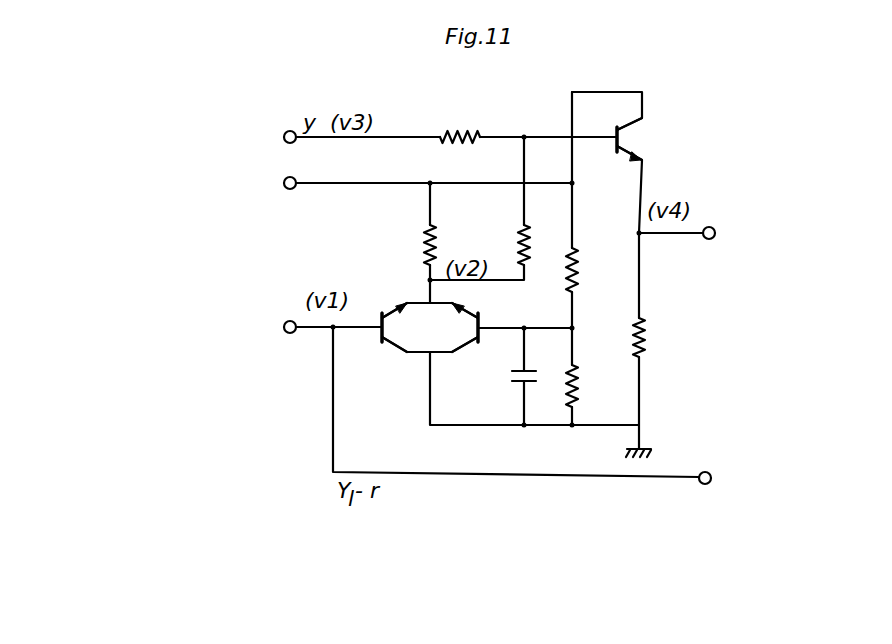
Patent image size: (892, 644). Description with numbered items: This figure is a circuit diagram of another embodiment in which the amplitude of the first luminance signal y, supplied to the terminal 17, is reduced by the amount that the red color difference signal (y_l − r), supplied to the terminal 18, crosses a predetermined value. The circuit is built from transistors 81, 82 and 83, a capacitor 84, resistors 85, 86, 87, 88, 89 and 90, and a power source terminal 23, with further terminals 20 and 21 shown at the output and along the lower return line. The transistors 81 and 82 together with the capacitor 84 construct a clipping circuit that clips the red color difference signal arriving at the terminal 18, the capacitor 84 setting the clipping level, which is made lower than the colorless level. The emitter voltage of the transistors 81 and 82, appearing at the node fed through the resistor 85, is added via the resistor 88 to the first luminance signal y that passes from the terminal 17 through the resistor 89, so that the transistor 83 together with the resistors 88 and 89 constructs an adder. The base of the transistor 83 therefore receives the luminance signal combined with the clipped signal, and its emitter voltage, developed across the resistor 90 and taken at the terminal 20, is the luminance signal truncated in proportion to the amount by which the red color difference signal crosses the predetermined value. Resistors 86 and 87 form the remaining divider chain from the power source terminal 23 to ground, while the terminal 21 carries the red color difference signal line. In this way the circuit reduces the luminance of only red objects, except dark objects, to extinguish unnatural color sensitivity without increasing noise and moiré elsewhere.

The terminal 17 is at (284, 136).
The power source terminal 23 is at (284, 183).
The terminal 18 is at (284, 327).
The output terminal (v4) 20 is at (711, 227).
The terminal (Y-r) 21 is at (702, 471).
The transistor 81 is at (400, 348).
The transistor 82 is at (472, 346).
The transistor 83 is at (640, 129).
The capacitor 84 is at (524, 384).
The resistor 85 is at (425, 246).
The resistor 86 is at (578, 263).
The resistor 87 is at (579, 386).
The resistor 88 is at (518, 242).
The resistor 89 is at (460, 128).
The resistor 90 is at (646, 330).